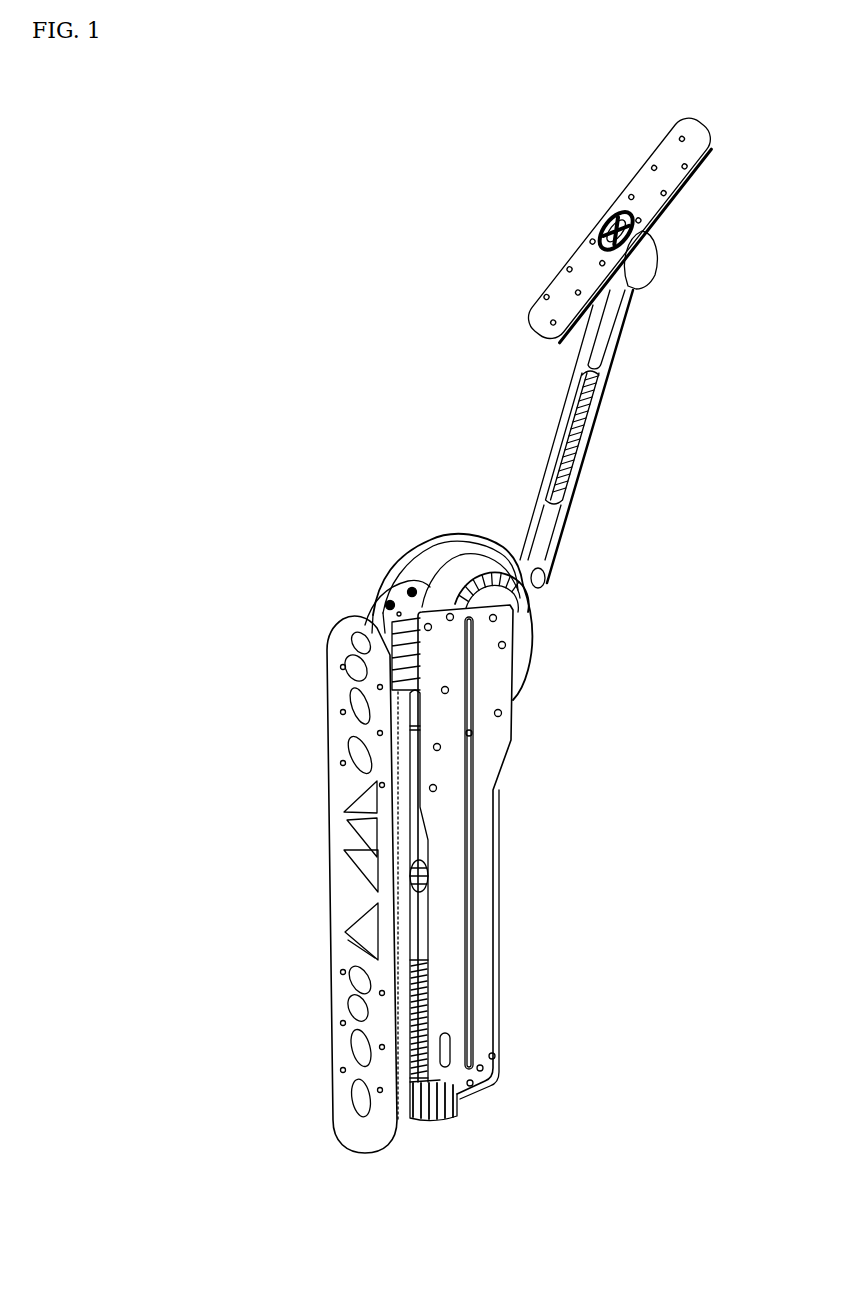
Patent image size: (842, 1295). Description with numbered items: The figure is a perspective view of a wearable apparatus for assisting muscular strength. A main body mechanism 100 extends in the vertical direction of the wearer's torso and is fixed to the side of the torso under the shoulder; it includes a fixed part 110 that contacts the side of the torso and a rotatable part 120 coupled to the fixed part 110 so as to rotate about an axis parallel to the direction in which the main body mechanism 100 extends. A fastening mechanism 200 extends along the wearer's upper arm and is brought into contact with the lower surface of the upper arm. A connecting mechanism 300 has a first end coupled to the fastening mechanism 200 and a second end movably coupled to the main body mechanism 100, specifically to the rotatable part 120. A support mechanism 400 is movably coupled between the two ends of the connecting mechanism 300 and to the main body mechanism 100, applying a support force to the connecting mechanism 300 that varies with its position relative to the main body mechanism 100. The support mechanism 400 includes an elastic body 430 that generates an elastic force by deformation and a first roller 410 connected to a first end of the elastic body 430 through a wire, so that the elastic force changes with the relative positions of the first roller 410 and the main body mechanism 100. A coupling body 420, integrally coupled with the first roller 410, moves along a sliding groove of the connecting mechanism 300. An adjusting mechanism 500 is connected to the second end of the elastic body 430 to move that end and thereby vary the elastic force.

The main body mechanism 100 is at (291, 896).
The fixed part 110 is at (362, 1130).
The rotatable part 120 is at (483, 1002).
The fastening mechanism 200 is at (650, 187).
The connecting mechanism 300 is at (578, 451).
The support mechanism 400 is at (575, 816).
The first roller 410 is at (533, 612).
The coupling body 420 is at (547, 592).
The elastic body 430 is at (520, 852).
The adjusting mechanism 500 is at (442, 1128).